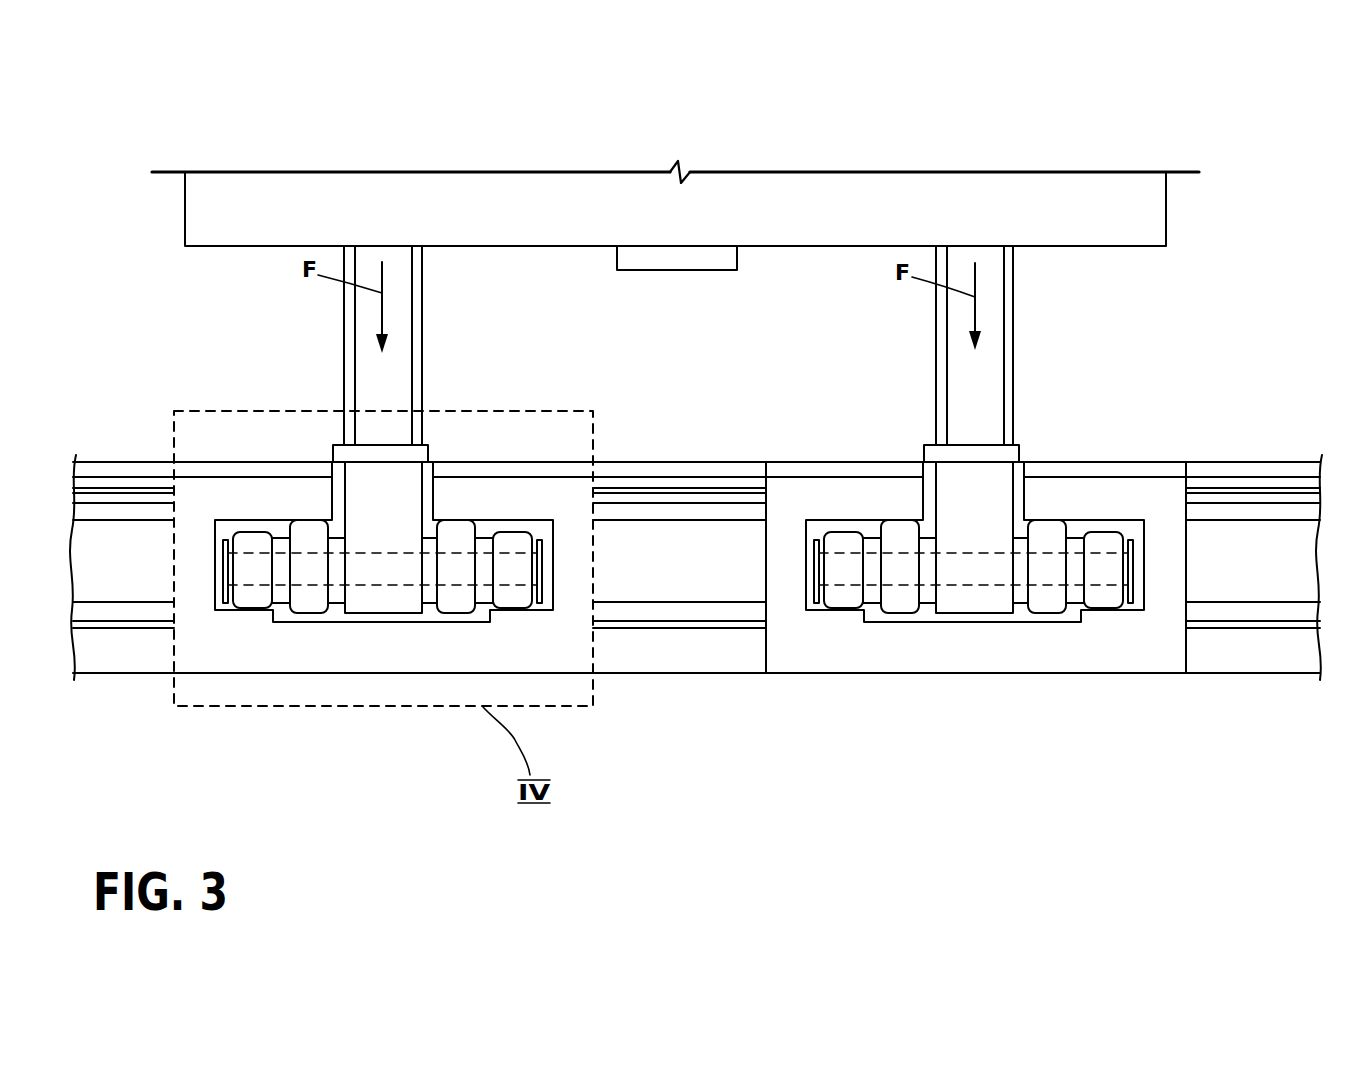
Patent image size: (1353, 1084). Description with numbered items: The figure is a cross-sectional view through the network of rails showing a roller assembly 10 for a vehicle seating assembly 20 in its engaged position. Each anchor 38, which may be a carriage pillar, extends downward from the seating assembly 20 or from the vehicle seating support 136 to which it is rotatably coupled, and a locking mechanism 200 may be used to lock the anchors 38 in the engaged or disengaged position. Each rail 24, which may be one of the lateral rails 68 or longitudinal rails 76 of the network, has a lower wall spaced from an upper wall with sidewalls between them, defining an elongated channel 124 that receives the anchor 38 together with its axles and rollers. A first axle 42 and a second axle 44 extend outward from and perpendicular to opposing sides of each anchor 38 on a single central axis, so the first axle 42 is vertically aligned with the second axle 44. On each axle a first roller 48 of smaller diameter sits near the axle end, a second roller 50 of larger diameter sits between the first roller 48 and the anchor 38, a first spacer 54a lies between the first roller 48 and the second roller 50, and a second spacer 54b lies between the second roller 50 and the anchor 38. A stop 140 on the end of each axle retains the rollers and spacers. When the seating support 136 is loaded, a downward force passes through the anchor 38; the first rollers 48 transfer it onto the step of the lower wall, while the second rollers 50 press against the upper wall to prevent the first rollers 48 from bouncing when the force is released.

The roller assembly 10 is at (1112, 345).
The vehicle seating assembly 20 is at (1184, 192).
The rail 24 is at (323, 637).
The anchor 38 is at (395, 372).
The first axle 42 is at (252, 530).
The second axle 44 is at (457, 553).
The first roller 48 is at (255, 595).
The second roller 50 is at (307, 600).
The first spacer 54a is at (280, 547).
The second spacer 54b is at (333, 547).
The lateral rail 68 is at (1267, 472).
The longitudinal rail 76 is at (405, 650).
The elongated channel 124 is at (378, 700).
The vehicle seating support 136 is at (1060, 208).
The stop 140 is at (543, 565).
The locking mechanism 200 is at (703, 262).